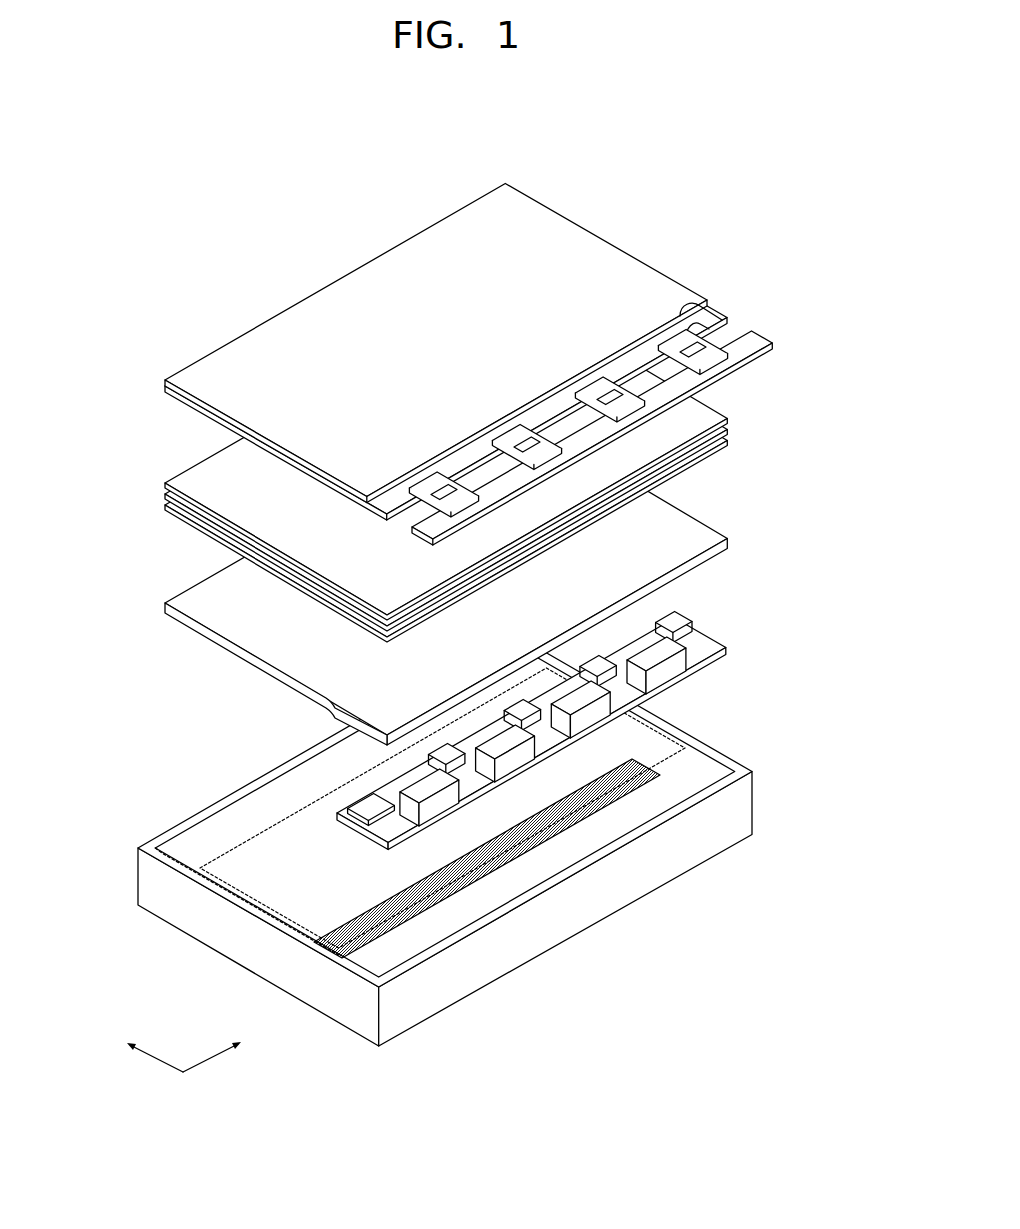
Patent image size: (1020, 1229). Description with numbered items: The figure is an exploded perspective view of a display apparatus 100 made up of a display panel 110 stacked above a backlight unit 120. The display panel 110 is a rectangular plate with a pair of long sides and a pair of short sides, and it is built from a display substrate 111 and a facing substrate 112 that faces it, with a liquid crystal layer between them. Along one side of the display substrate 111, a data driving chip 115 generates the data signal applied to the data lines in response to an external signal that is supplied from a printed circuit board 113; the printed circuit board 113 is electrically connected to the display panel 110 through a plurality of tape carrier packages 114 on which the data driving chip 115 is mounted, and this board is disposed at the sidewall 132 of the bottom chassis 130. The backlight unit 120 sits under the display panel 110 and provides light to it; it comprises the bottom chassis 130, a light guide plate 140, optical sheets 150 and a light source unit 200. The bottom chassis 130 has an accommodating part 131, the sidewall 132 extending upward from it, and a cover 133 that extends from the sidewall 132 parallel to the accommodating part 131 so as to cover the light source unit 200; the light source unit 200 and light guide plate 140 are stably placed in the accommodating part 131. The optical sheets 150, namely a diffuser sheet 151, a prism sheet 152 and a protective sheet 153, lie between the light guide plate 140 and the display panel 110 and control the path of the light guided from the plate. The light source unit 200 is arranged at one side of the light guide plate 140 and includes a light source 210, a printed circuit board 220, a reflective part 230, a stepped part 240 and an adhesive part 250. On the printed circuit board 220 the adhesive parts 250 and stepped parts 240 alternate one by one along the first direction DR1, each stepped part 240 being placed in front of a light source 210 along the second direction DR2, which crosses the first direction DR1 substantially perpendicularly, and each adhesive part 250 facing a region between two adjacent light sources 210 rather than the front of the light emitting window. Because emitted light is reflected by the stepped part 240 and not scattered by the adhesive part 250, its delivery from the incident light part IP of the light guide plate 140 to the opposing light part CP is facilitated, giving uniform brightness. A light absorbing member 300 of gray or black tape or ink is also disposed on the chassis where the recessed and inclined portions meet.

The display apparatus 100 is at (608, 173).
The display panel 110 is at (93, 372).
The display substrate 111 is at (165, 390).
The facing substrate 112 is at (165, 381).
The printed circuit board 113 is at (755, 339).
The tape carrier packages 114 is at (692, 301).
The data driving chip 115 is at (699, 342).
The backlight unit 120 is at (92, 463).
The bottom chassis 130 is at (805, 724).
The accommodating part 131 is at (605, 758).
The sidewall 132 is at (752, 817).
The cover 133 is at (718, 772).
The light guide plate 140 is at (690, 531).
The optical sheets 150 is at (799, 395).
The diffuser sheet 151 is at (730, 441).
The prism sheet 152 is at (730, 430).
The protective sheet 153 is at (710, 412).
The light source unit 200 is at (573, 1013).
The light source 210 is at (600, 722).
The printed circuit board 220 is at (665, 672).
The reflective part 230 is at (589, 713).
The stepped part 240 is at (513, 757).
The adhesive part 250 is at (437, 802).
The light absorbing member 300 is at (420, 930).
The incident light part IP is at (731, 541).
The opposing light part CP is at (165, 602).
The first direction DR1 is at (225, 1044).
The second direction DR2 is at (144, 1044).